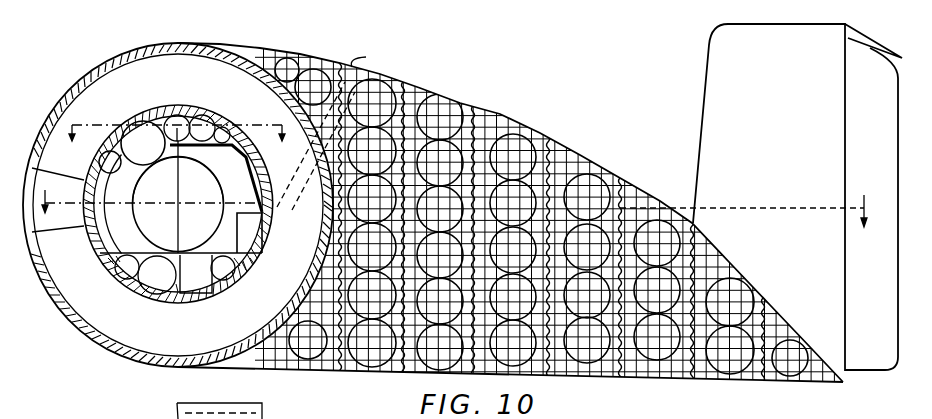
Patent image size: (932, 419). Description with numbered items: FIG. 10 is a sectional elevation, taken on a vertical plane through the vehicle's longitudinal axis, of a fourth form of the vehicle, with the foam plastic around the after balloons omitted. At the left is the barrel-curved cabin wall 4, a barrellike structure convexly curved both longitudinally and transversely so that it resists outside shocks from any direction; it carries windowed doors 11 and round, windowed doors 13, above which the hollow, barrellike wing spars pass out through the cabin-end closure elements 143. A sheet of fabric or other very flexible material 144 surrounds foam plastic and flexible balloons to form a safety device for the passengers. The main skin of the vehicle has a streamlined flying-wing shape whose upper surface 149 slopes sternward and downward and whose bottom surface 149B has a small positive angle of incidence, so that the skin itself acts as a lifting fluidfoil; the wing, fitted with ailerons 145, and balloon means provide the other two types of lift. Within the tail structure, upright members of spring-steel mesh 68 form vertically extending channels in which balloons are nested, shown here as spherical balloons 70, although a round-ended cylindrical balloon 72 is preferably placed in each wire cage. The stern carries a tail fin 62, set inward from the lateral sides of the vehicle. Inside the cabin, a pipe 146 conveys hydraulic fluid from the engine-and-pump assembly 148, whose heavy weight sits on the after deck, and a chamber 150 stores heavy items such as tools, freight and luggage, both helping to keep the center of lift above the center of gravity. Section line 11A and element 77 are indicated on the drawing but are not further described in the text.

The barrel-curved cabin wall 4 is at (167, 302).
The windowed door 11 is at (181, 145).
The section line 11A is at (464, 220).
The windowed doors 13 is at (217, 221).
The tail fin 62 is at (789, 112).
The upright mesh member 68 is at (562, 142).
The spherical balloon 70 is at (117, 168).
The round-ended cylindrical balloon 72 is at (154, 152).
The outer skin band 77 is at (292, 371).
The cabin-end closure element 143 is at (204, 158).
The sheet of flexible material 144 is at (127, 169).
The aileron 145 is at (245, 411).
The pipe 146 is at (243, 178).
The engine-and-pump assembly 148 is at (253, 233).
The upper surface 149 is at (470, 77).
The bottom surface 149B is at (700, 384).
The chamber 150 is at (209, 285).